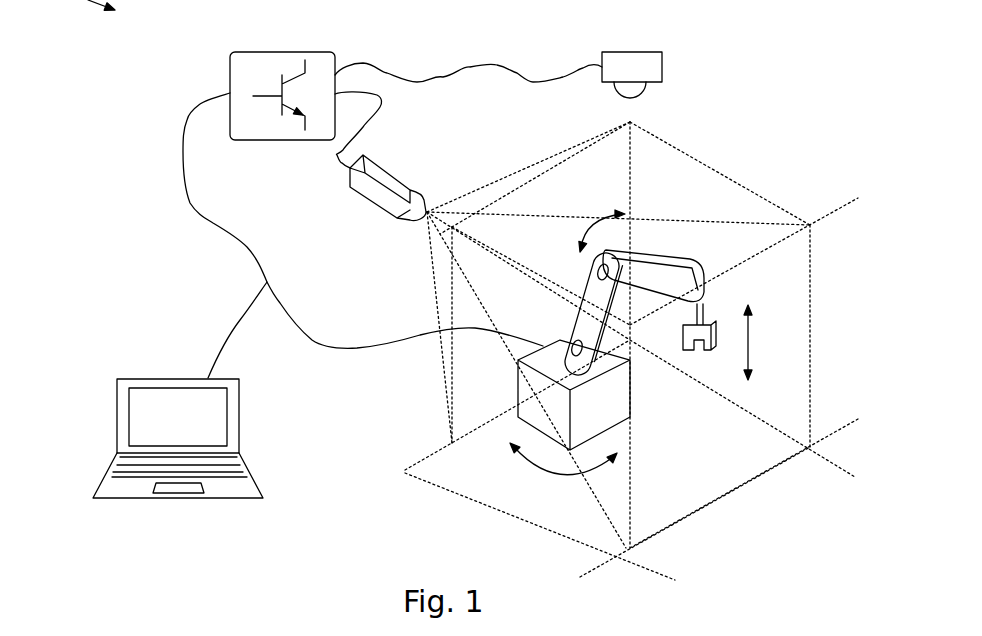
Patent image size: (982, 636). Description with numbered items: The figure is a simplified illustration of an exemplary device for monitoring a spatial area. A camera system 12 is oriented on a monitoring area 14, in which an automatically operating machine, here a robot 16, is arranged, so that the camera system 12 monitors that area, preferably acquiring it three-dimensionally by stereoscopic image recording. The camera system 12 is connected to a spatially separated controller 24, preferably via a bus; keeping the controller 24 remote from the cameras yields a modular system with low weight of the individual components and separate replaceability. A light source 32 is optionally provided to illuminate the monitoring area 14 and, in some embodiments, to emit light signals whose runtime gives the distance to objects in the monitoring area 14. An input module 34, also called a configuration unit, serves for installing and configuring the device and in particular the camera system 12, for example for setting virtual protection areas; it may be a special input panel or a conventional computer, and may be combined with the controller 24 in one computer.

The camera system 12 is at (373, 192).
The monitoring area 14 is at (700, 163).
The robot 16 is at (673, 265).
The controller 24 is at (275, 50).
The light source 32 is at (632, 52).
The input module 34 is at (140, 378).